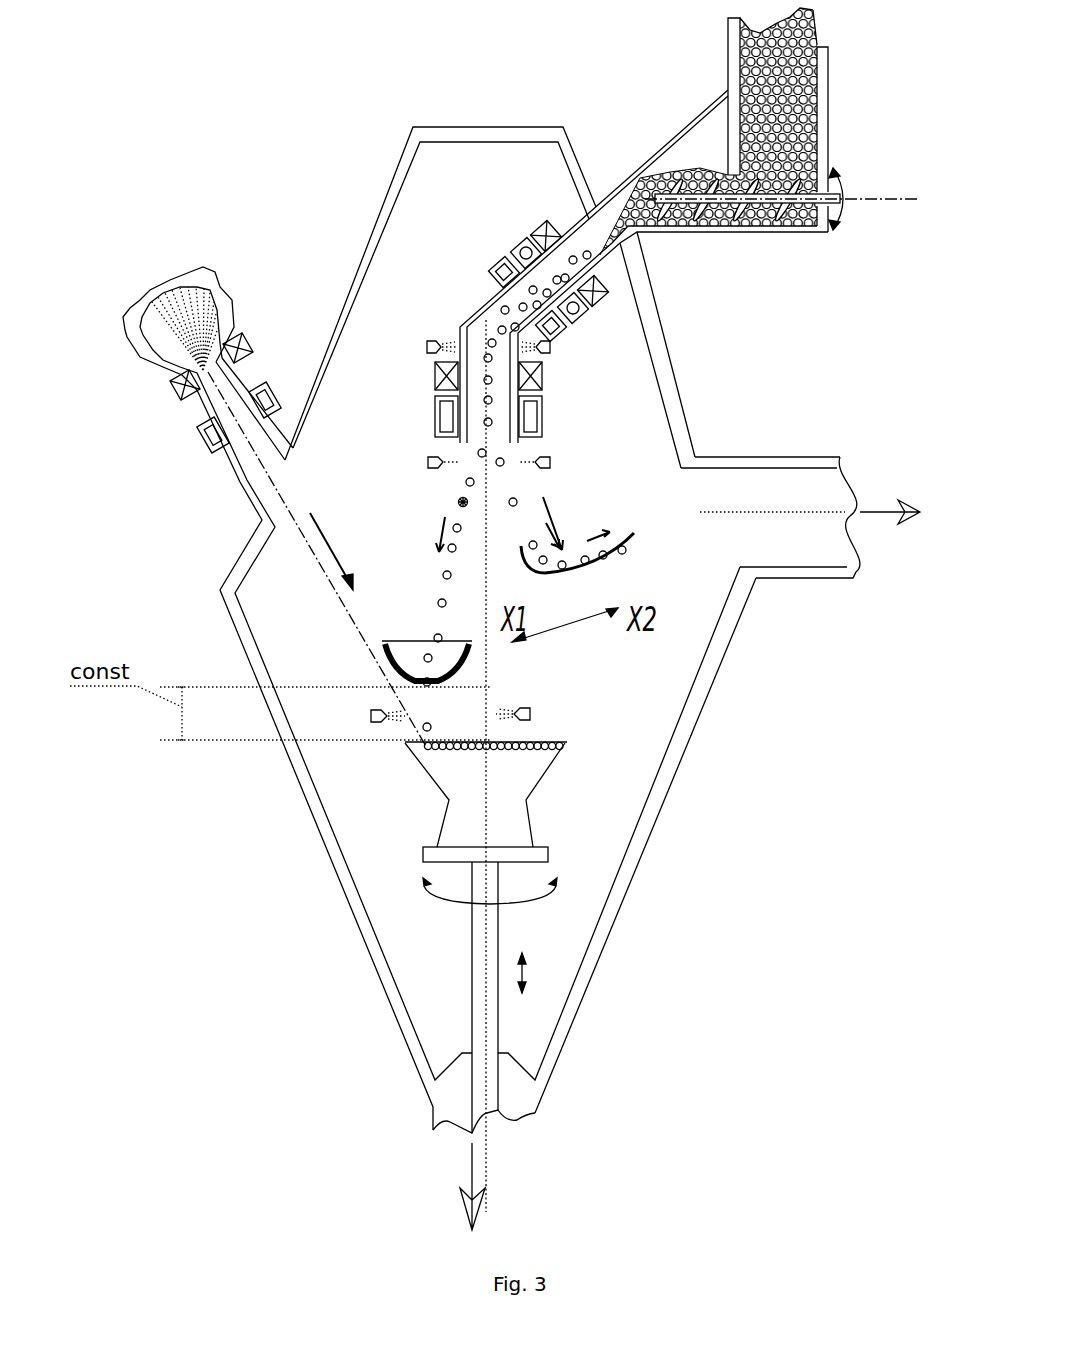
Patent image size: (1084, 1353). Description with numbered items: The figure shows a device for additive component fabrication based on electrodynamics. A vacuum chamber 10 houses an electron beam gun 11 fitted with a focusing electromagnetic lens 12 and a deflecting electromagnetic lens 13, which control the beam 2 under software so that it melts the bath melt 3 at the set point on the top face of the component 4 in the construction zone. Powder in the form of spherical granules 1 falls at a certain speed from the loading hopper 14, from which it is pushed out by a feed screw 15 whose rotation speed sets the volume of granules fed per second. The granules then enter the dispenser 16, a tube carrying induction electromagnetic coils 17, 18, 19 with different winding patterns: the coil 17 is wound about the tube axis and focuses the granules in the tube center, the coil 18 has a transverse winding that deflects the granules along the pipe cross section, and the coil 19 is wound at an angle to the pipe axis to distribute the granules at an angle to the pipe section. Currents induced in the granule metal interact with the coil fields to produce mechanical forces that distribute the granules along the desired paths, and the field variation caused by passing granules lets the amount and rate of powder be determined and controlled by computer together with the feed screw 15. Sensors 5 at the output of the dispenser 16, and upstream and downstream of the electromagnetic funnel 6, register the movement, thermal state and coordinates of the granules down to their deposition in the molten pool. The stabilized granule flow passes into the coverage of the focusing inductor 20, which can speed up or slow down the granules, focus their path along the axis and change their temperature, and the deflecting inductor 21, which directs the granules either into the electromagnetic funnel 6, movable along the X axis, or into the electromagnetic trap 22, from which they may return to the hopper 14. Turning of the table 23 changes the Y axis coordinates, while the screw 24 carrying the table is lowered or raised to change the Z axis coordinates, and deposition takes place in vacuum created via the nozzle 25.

The spherical granules 1 is at (470, 503).
The beam 2 is at (344, 598).
The bath melt 3 is at (420, 749).
The component 4 is at (527, 771).
The sensors 5 is at (544, 353).
The electromagnetic funnel 6 is at (381, 643).
The vacuum chamber 10 is at (655, 357).
The electron beam gun 11 is at (226, 286).
The focusing electromagnetic lens 12 is at (240, 340).
The deflecting electromagnetic lens 13 is at (260, 388).
The loading hopper 14 is at (818, 115).
The feed screw 15 is at (771, 228).
The dispenser 16 is at (622, 245).
The induction electromagnetic coil 17 is at (547, 222).
The induction electromagnetic coil 18 is at (518, 243).
The induction electromagnetic coil 19 is at (494, 262).
The focusing inductor 20 is at (541, 378).
The deflecting inductor 21 is at (540, 420).
The electromagnetic trap 22 is at (629, 541).
The table 23 is at (540, 854).
The screw 24 is at (484, 987).
The nozzle 25 is at (768, 578).